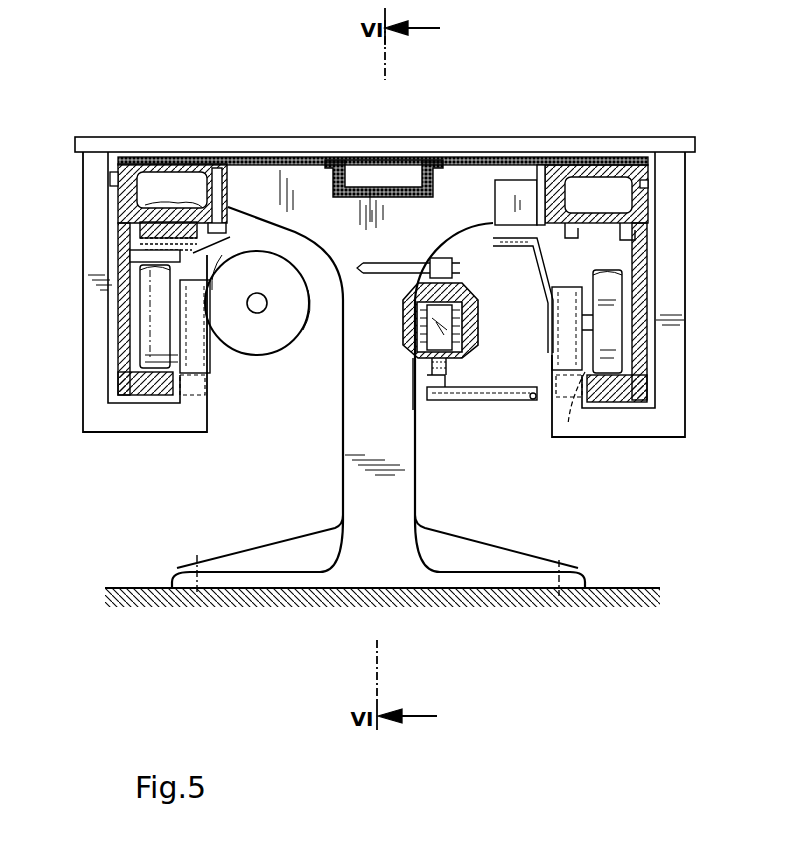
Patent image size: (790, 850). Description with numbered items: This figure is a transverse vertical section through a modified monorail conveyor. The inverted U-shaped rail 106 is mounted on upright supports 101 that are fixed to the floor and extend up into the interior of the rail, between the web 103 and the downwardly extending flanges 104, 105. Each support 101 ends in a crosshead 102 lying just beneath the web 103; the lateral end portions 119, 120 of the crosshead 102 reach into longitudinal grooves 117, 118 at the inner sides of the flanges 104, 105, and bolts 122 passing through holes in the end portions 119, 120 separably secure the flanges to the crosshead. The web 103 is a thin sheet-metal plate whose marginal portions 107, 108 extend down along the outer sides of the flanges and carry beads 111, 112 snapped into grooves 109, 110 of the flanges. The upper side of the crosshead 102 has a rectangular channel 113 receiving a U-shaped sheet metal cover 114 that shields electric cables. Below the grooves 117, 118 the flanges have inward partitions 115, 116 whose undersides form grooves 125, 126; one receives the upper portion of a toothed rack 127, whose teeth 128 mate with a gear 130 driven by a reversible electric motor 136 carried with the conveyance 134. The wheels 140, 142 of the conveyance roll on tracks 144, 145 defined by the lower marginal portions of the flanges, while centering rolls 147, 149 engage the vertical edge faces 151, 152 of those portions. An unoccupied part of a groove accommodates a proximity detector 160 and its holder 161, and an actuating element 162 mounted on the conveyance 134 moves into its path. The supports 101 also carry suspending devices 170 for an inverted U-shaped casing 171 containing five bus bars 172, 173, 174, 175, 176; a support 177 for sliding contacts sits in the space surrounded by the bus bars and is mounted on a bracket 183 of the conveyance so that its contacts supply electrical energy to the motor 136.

The upright support 101 is at (342, 497).
The crosshead 102 is at (485, 182).
The web 103 is at (285, 140).
The flange 104 is at (125, 312).
The flange 105 is at (647, 295).
The rail 106 is at (334, 157).
The marginal portion of the web 107 is at (118, 168).
The marginal portion of the web 108 is at (650, 170).
The groove 109 is at (110, 178).
The groove 110 is at (648, 183).
The bead 111 is at (110, 186).
The bead 112 is at (648, 188).
The channel 113 is at (393, 182).
The U-shaped sheet metal cover 114 is at (410, 200).
The partition 115 is at (178, 205).
The partition 116 is at (605, 170).
The groove 117 is at (206, 175).
The groove 118 is at (578, 165).
The lateral end portion of the crosshead 119 is at (150, 165).
The lateral end portion of the crosshead 120 is at (625, 165).
The bolt 122 is at (222, 160).
The groove 125 is at (150, 230).
The groove 126 is at (650, 237).
The toothed rack 127 is at (140, 240).
The teeth 128 is at (130, 256).
The gear 130 is at (215, 250).
The conveyance 134 is at (83, 362).
The reversible electric motor 136 is at (260, 352).
The wheel 140 is at (145, 333).
The wheel 142 is at (605, 272).
The track 144 is at (118, 372).
The track 145 is at (632, 370).
The centering roll 147 is at (205, 395).
The centering roll 149 is at (568, 425).
The vertical edge face 151 is at (200, 372).
The vertical edge face 152 is at (580, 397).
The proximity detector 160 is at (505, 185).
The holder 161 is at (535, 190).
The actuating element 162 is at (497, 240).
The suspending device 170 is at (455, 268).
The casing 171 is at (417, 298).
The bus bar 172 is at (470, 300).
The bus bar 173 is at (464, 322).
The bus bar 174 is at (462, 343).
The bus bar 175 is at (415, 336).
The bus bar 176 is at (415, 322).
The support for sliding contacts 177 is at (452, 362).
The bracket 183 is at (420, 390).